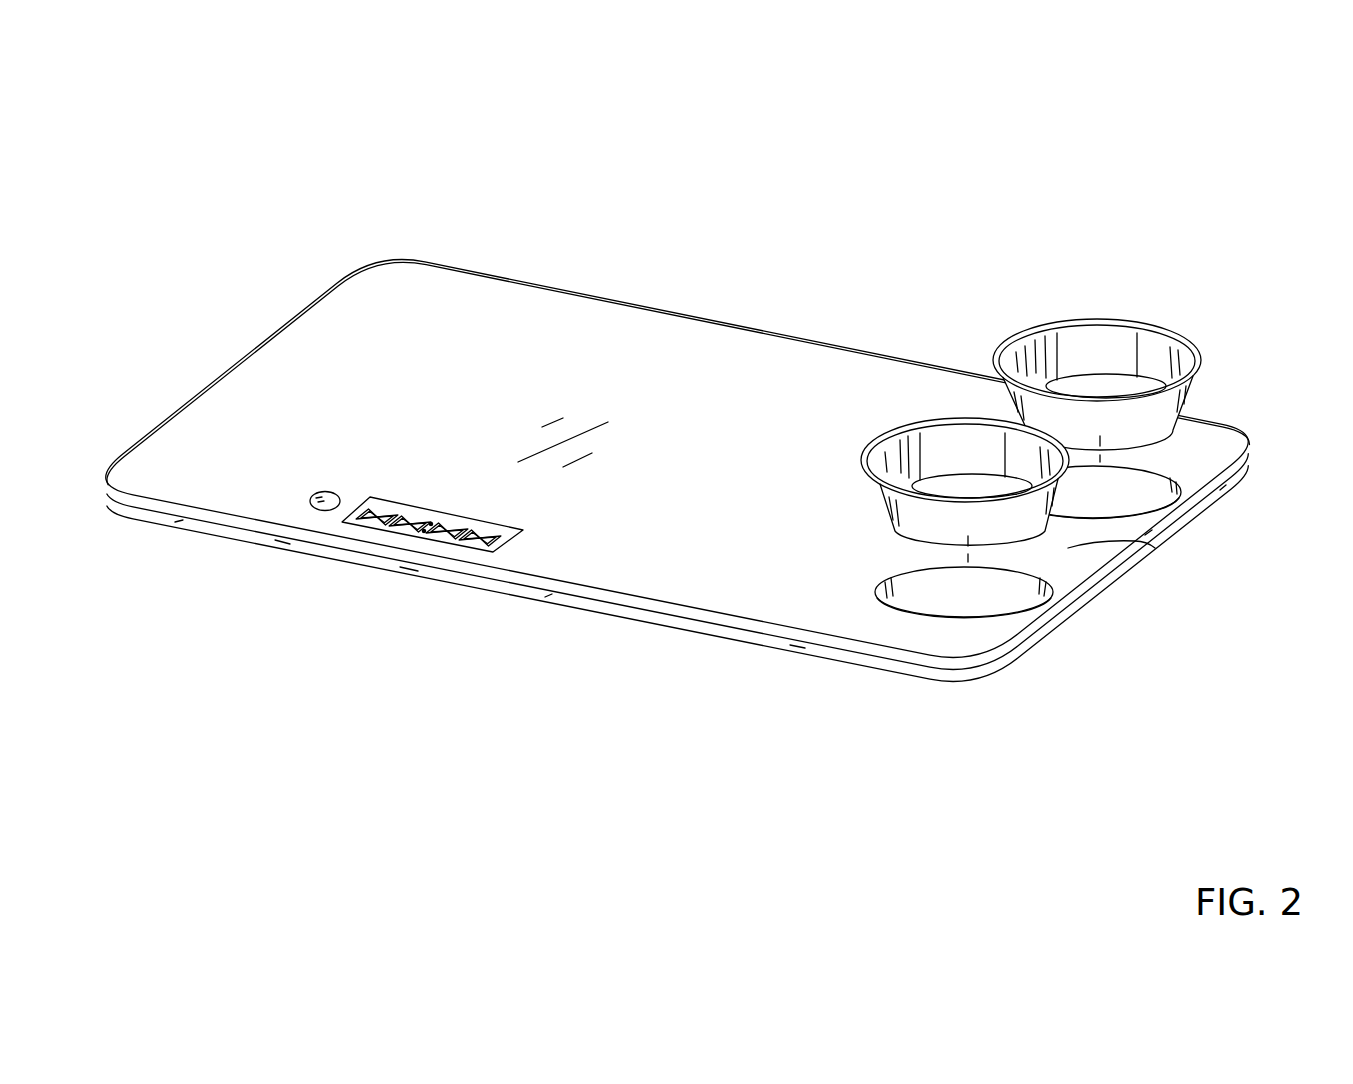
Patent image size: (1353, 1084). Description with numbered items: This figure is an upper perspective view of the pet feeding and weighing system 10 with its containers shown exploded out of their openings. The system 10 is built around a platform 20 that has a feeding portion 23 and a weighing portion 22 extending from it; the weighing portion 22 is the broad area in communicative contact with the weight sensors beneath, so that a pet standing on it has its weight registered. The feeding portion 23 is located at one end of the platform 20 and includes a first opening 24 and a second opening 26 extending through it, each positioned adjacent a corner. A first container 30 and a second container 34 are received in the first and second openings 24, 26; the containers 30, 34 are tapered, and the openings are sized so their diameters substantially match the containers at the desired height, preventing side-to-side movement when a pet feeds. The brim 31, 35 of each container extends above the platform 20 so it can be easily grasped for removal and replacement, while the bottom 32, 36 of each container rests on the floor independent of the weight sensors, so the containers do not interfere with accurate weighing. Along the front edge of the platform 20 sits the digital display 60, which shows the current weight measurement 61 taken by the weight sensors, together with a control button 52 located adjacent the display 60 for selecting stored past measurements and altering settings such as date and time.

The pet feeding and weighing system 10 is at (699, 425).
The platform 20 is at (704, 493).
The weighing portion 22 is at (763, 413).
The feeding portion 23 is at (1150, 548).
The first opening 24 is at (1218, 506).
The second opening 26 is at (977, 617).
The first container 30 is at (1140, 303).
The brim 31 is at (1107, 322).
The bottom 32 is at (1165, 441).
The second container 34 is at (893, 586).
The second cup rim 35 is at (880, 484).
The bottom 36 is at (1038, 645).
The control button 52 is at (311, 502).
The digital display 60 is at (385, 577).
The current weight measurement 61 is at (386, 528).